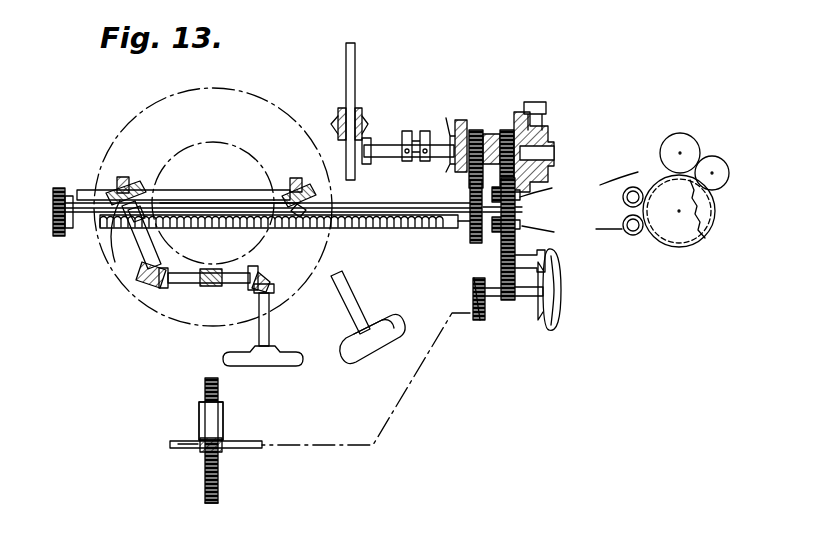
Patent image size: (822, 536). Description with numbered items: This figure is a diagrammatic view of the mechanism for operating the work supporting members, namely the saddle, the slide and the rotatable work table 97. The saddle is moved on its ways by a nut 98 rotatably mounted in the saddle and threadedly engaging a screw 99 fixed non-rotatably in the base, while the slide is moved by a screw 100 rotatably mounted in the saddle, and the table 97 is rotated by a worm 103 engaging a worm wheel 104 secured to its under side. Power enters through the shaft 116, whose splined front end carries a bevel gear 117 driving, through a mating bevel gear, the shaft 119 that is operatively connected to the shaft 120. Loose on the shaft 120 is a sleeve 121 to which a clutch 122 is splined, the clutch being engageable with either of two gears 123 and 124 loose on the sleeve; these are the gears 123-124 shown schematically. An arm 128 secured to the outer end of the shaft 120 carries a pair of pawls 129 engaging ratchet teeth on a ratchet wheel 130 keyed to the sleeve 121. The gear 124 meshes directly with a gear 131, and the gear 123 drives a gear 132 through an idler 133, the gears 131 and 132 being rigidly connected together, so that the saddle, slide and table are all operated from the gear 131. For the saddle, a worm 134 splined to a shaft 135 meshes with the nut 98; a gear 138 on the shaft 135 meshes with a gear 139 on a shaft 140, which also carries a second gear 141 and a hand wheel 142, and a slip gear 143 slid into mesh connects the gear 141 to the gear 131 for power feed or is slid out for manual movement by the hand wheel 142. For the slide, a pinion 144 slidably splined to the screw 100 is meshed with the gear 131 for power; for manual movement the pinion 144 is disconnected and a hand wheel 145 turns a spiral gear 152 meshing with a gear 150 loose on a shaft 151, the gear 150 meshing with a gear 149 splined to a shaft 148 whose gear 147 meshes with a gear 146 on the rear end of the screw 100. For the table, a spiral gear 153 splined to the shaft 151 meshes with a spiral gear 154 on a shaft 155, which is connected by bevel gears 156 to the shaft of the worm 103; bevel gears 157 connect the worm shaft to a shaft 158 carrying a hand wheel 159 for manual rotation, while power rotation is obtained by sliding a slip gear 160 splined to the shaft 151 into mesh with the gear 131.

The work table 97 is at (272, 98).
The nut 98 is at (224, 417).
The screw 99 is at (218, 495).
The screw 100 is at (112, 250).
The worm 103 is at (212, 287).
The worm wheel 104 is at (216, 142).
The shaft 116 is at (356, 52).
The bevel gear 117 is at (362, 114).
The shaft 119 is at (388, 143).
The shaft 120 is at (414, 131).
The sleeve 121 is at (455, 126).
The clutch 122 is at (490, 134).
The gear 123 is at (476, 130).
The gear 124 is at (508, 130).
The gears 123-124 is at (696, 136).
The arm 128 is at (548, 131).
The pawls 129 is at (540, 102).
The ratchet wheel 130 is at (565, 187).
The gear 131 is at (524, 211).
The gear 132 is at (470, 234).
The idler 133 is at (470, 187).
The worm 134 is at (200, 450).
The shaft 135 is at (242, 448).
The gear 138 is at (478, 321).
The gear 139 is at (473, 284).
The shaft 140 is at (492, 297).
The gear 141 is at (514, 300).
The hand wheel 142 is at (561, 320).
The slip gear 143 is at (530, 247).
The pinion 144 is at (557, 229).
The hand wheel 145 is at (358, 298).
The gear 146 is at (58, 236).
The gear 147 is at (60, 198).
The shaft 148 is at (78, 189).
The gear 149 is at (290, 229).
The gear 150 is at (293, 178).
The shaft 151 is at (224, 196).
The spiral gear 152 is at (308, 185).
The spiral gear 153 is at (123, 177).
The spiral gear 154 is at (142, 182).
The shaft 155 is at (134, 240).
The bevel gears 156 is at (152, 290).
The bevel gears 157 is at (272, 280).
The shaft 158 is at (270, 320).
The hand wheel 159 is at (272, 365).
The slip gear 160 is at (634, 187).